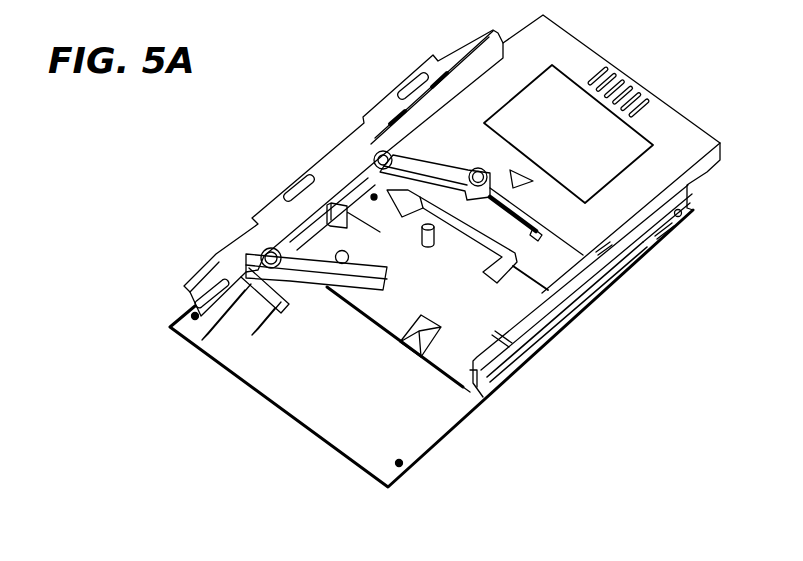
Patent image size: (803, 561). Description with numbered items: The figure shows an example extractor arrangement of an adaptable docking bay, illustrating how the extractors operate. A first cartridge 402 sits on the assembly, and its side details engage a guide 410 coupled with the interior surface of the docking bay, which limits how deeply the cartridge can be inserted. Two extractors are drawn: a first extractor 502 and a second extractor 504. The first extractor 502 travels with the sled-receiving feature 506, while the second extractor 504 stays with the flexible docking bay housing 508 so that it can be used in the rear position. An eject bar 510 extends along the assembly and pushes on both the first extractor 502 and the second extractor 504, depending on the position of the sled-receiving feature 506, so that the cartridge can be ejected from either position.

The first cartridge 402 is at (598, 62).
The guide 410 is at (563, 300).
The first extractor 502 is at (366, 153).
The second extractor 504 is at (285, 262).
The sled-receiving feature 506 is at (468, 391).
The flexible docking bay housing 508 is at (314, 412).
The eject bar 510 is at (442, 56).